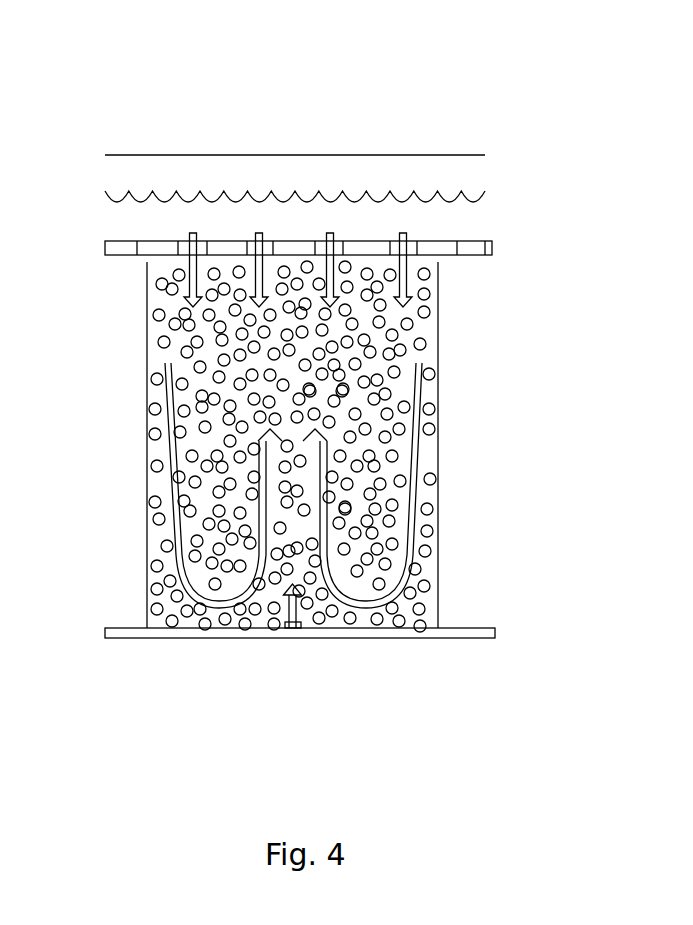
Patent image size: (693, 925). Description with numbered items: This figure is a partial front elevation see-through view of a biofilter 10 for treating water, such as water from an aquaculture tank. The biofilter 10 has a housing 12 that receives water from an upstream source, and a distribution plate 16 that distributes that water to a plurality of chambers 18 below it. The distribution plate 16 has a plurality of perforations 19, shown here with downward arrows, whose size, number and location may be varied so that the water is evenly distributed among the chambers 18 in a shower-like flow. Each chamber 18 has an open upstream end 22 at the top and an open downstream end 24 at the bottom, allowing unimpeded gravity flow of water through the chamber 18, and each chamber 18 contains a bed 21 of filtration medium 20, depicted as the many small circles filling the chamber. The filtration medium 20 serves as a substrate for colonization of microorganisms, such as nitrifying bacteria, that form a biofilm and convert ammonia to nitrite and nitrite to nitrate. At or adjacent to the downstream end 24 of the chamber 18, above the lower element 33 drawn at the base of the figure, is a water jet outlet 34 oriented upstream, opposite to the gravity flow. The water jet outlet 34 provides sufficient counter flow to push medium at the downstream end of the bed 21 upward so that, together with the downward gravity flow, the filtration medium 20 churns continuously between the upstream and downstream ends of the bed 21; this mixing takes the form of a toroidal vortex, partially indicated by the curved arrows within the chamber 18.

The biofilter 10 is at (437, 110).
The housing 12 is at (288, 155).
The distribution plate 16 is at (492, 241).
The perforations 19 is at (340, 241).
The upstream ends 22 is at (140, 260).
The bed 21 is at (525, 625).
The chambers 18 is at (147, 442).
The filtration medium 20 is at (150, 521).
The downstream ends 24 is at (135, 625).
The base plate 33 is at (420, 640).
The water jet outlets 34 is at (300, 628).